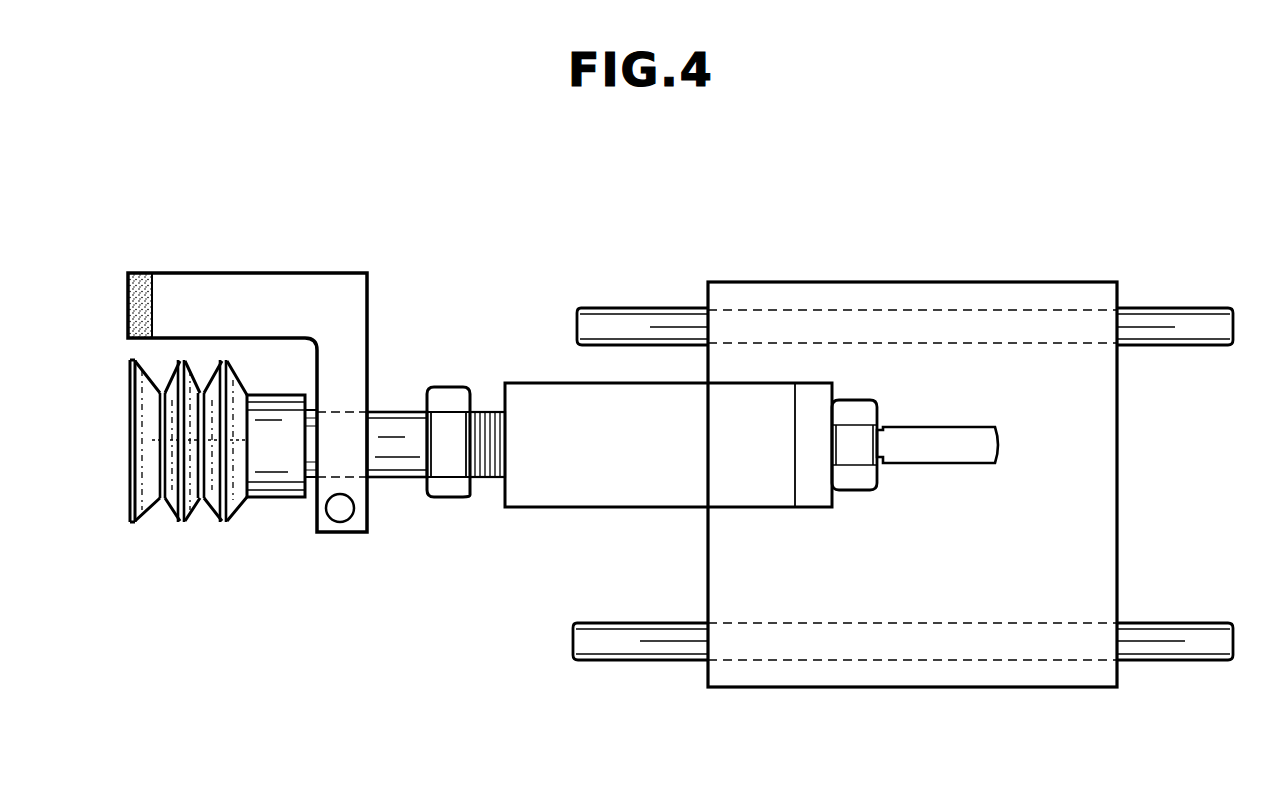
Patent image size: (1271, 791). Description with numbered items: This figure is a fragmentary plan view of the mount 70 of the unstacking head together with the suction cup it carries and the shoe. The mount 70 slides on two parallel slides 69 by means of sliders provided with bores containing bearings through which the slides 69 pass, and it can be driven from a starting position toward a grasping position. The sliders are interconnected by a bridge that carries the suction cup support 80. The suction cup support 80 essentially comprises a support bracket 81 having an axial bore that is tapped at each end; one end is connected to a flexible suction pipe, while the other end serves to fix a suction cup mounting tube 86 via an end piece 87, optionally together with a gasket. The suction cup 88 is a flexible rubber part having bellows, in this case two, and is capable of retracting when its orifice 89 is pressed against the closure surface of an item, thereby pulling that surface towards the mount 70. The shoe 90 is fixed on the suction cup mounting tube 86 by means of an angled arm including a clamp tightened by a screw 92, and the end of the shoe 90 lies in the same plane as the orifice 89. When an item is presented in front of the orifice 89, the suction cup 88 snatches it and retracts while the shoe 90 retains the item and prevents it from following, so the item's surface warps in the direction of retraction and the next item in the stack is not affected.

The parallel slides 69 is at (592, 318).
The mount 70 is at (724, 272).
The suction cup support 80 is at (742, 434).
The support bracket 81 is at (600, 468).
The suction cup mounting tube 86 is at (403, 460).
The end piece 87 is at (455, 478).
The suction cup 88 is at (226, 499).
The orifice 89 is at (128, 460).
The shoe 90 is at (135, 300).
The screw 92 is at (332, 522).